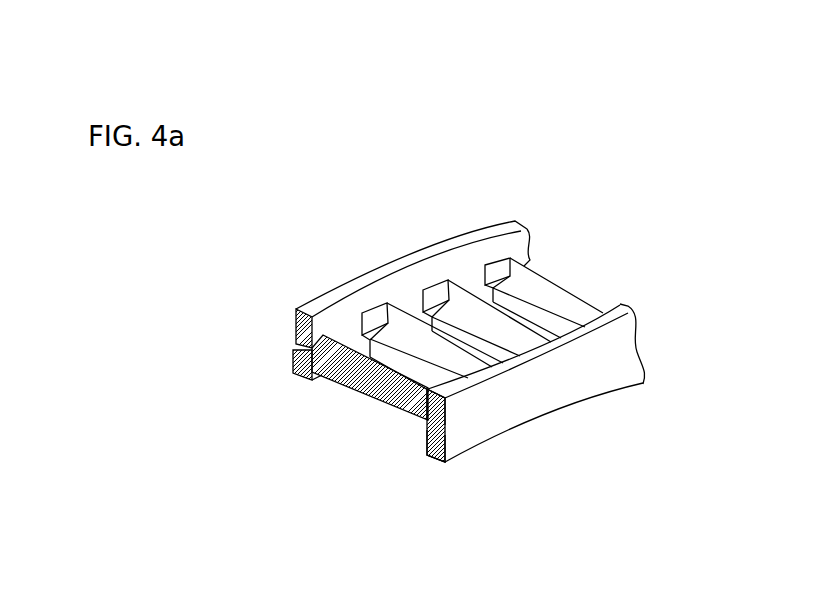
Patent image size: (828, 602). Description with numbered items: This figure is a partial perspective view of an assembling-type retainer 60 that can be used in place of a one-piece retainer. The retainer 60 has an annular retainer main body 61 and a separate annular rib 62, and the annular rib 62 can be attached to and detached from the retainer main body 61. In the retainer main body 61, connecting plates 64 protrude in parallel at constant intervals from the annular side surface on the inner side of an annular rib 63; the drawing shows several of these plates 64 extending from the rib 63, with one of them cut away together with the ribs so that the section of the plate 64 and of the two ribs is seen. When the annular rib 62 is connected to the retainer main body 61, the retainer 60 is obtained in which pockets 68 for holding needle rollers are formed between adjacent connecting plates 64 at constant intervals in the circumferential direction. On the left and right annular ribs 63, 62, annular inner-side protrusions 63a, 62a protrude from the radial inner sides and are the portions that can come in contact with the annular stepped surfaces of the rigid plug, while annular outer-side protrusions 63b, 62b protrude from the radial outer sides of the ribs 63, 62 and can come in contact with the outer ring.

The retainer 60 is at (577, 251).
The retainer main body 61 is at (428, 466).
The annular rib 62 is at (270, 369).
The annular inner-side protrusion 62a is at (294, 367).
The annular outer-side protrusion 62b is at (295, 331).
The annular rib 63 is at (499, 446).
The annular inner-side protrusion 63a is at (446, 453).
The annular outer-side protrusion 63b is at (445, 402).
The connecting plate 64 is at (387, 318).
The pocket 68 is at (390, 346).